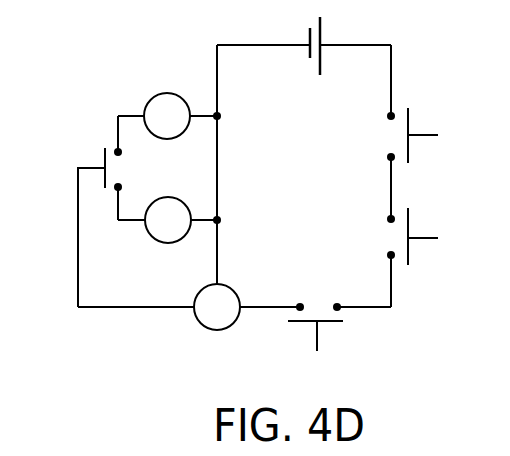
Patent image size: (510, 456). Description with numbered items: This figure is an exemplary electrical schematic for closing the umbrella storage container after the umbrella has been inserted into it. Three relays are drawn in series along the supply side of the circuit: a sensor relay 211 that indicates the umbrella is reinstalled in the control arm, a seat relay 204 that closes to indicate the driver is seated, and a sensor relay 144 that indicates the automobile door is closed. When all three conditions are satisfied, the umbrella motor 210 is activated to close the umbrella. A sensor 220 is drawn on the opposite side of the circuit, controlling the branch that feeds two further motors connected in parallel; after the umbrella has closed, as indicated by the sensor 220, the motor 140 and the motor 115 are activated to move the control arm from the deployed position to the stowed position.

The motor 140 is at (163, 93).
The motor 115 is at (152, 237).
The umbrella motor 210 is at (215, 331).
The sensor 220 is at (105, 162).
The sensor relay 211 is at (422, 133).
The seat relay 204 is at (427, 239).
The sensor relay 144 is at (321, 330).